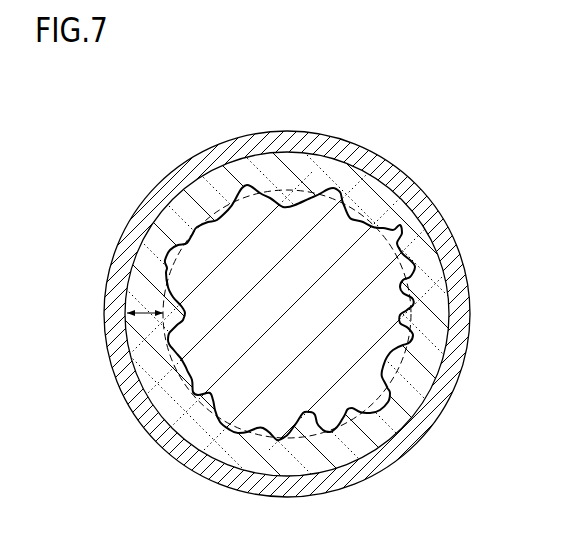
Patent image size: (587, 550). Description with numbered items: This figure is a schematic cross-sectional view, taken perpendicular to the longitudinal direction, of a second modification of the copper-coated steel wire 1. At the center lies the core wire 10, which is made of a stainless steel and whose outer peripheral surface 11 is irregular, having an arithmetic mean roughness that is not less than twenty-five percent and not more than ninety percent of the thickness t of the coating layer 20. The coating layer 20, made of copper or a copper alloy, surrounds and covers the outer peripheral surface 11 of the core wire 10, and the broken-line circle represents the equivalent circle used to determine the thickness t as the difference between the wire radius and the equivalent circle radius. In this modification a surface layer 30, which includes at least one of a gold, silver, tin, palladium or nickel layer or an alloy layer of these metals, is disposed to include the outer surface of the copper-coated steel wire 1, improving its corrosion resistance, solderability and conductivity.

The copper-coated steel wire 1 is at (383, 126).
The core wire 10 is at (377, 296).
The outer peripheral surface 11 is at (393, 213).
The coating layer 20 is at (423, 358).
The surface layer 30 is at (240, 150).
The thickness of the coating layer t is at (127, 312).